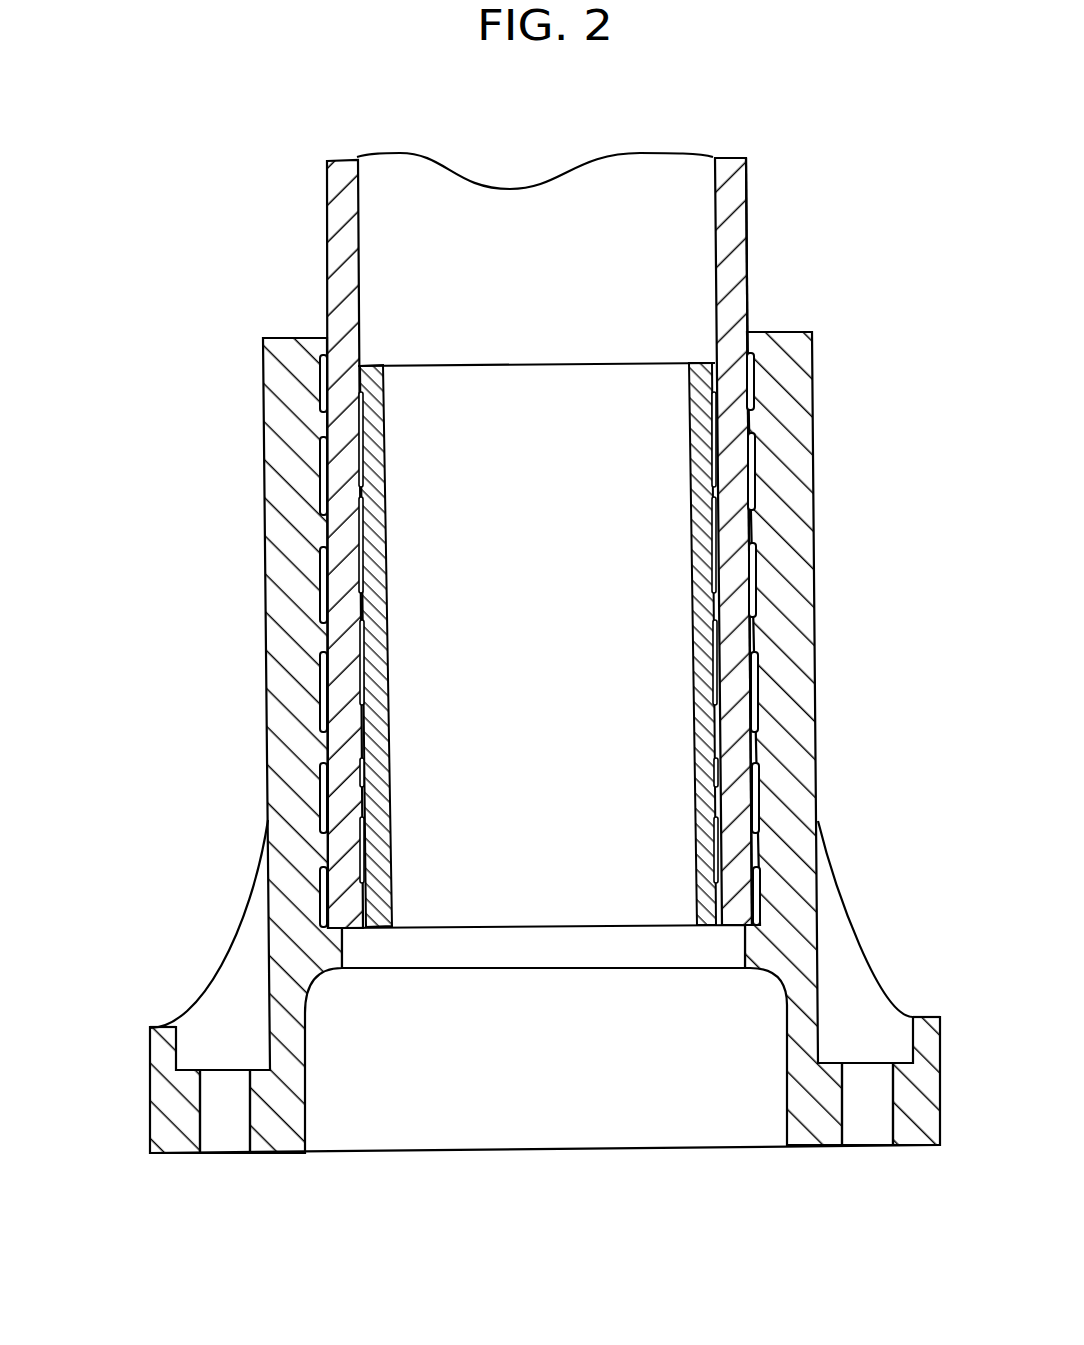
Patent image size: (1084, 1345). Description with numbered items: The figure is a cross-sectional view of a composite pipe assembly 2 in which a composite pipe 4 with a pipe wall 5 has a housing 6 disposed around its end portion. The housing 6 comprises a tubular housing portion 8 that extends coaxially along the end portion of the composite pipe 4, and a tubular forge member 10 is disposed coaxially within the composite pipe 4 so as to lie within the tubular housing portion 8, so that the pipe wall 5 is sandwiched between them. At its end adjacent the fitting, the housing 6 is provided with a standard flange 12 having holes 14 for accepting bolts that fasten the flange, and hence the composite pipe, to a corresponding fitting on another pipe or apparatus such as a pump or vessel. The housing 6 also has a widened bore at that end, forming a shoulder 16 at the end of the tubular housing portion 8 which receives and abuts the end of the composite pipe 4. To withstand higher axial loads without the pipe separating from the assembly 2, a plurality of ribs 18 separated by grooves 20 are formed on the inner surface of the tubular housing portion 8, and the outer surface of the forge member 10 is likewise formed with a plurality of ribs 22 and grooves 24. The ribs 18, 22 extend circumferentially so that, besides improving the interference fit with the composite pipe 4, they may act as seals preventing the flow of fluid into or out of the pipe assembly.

The composite pipe assembly 2 is at (825, 226).
The composite pipe 4 is at (340, 240).
The pipe wall 5 is at (745, 493).
The housing 6 is at (178, 703).
The tubular housing portion 8 is at (790, 558).
The forge member 10 is at (745, 443).
The flange 12 is at (150, 1028).
The holes 14 is at (200, 1113).
The shoulder 16 is at (755, 945).
The ribs 18 is at (327, 636).
The grooves 20 is at (322, 448).
The ribs 22 is at (365, 593).
The grooves 24 is at (365, 853).